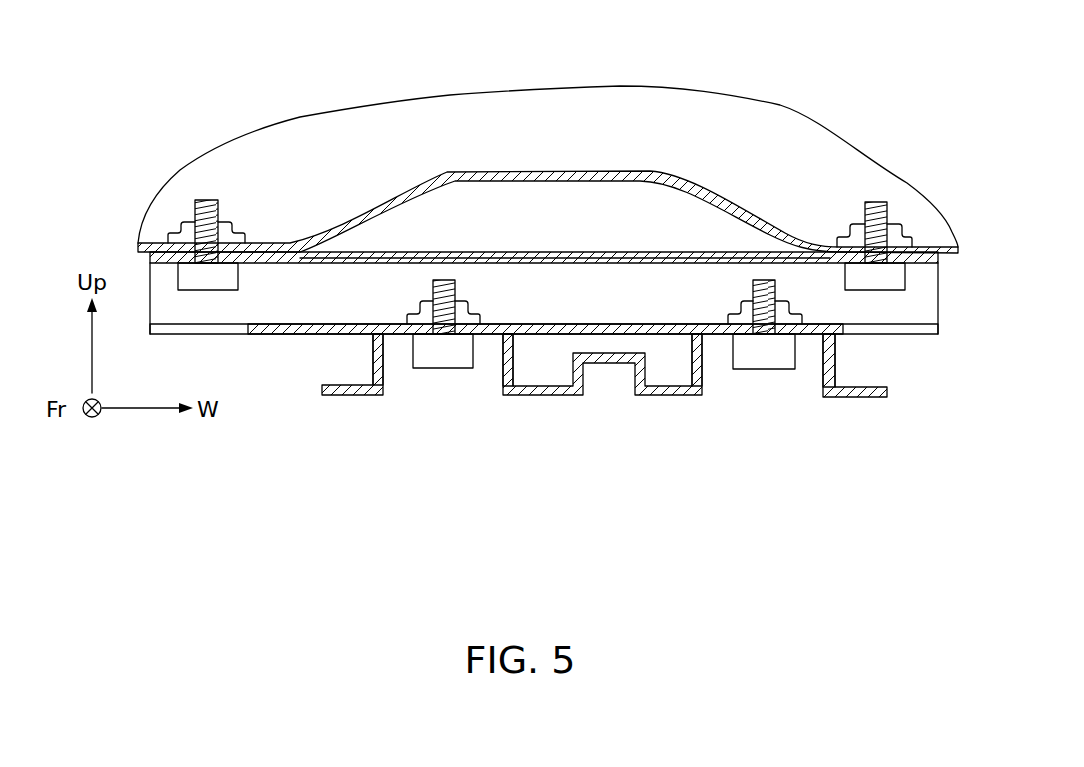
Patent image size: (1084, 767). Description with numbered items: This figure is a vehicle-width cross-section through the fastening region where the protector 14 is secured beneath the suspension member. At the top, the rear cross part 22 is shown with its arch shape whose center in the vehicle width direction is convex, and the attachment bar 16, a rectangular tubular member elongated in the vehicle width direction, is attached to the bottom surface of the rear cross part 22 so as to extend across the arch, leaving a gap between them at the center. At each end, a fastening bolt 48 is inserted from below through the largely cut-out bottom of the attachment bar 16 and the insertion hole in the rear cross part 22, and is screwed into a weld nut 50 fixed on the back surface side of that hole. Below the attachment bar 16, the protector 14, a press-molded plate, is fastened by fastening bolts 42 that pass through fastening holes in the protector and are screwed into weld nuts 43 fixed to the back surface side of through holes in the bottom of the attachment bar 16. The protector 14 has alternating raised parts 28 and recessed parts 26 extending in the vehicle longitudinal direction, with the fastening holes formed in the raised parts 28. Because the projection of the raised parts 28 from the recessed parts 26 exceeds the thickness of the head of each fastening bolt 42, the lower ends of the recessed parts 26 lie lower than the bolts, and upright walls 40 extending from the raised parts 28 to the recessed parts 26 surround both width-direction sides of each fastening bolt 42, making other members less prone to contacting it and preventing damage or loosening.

The protector 14 is at (882, 419).
The attachment bar 16 is at (673, 250).
The rear cross part 22 is at (538, 168).
The recessed part 26 is at (345, 397).
The raised part 28 is at (395, 344).
The upright wall 40 is at (372, 360).
The fastening bolt 42 is at (447, 368).
The weld nut 43 is at (470, 311).
The fastening bolt 48 is at (207, 200).
The weld nut 50 is at (177, 228).